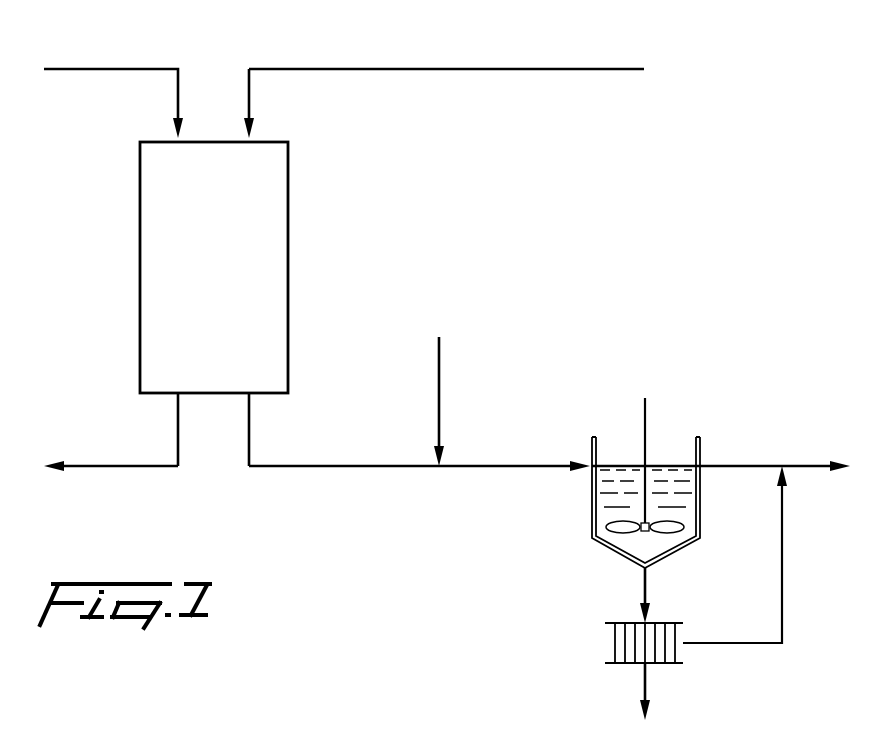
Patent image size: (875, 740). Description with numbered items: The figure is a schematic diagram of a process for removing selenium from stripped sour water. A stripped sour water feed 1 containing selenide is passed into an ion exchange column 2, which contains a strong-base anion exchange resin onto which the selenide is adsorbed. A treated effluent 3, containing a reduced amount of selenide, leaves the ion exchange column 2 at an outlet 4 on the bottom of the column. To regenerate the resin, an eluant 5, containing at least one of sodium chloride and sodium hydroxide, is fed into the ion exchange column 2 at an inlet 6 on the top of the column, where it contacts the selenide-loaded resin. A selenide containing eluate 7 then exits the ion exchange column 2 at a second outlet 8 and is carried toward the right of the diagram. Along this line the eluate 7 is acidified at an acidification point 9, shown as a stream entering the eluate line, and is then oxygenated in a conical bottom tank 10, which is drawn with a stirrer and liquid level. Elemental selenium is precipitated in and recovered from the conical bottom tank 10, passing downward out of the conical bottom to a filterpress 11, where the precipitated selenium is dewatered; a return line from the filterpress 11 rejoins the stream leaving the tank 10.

The stripped sour water feed 1 is at (88, 69).
The ion exchange column 2 is at (140, 260).
The treated effluent 3 is at (118, 468).
The effluent outlet 4 is at (178, 398).
The eluant 5 is at (488, 69).
The eluant inlet 6 is at (254, 139).
The selenide containing eluate 7 is at (287, 468).
The eluate outlet 8 is at (249, 400).
The acidification point 9 is at (441, 420).
The conical bottom tank 10 is at (700, 447).
The filterpress 11 is at (623, 664).